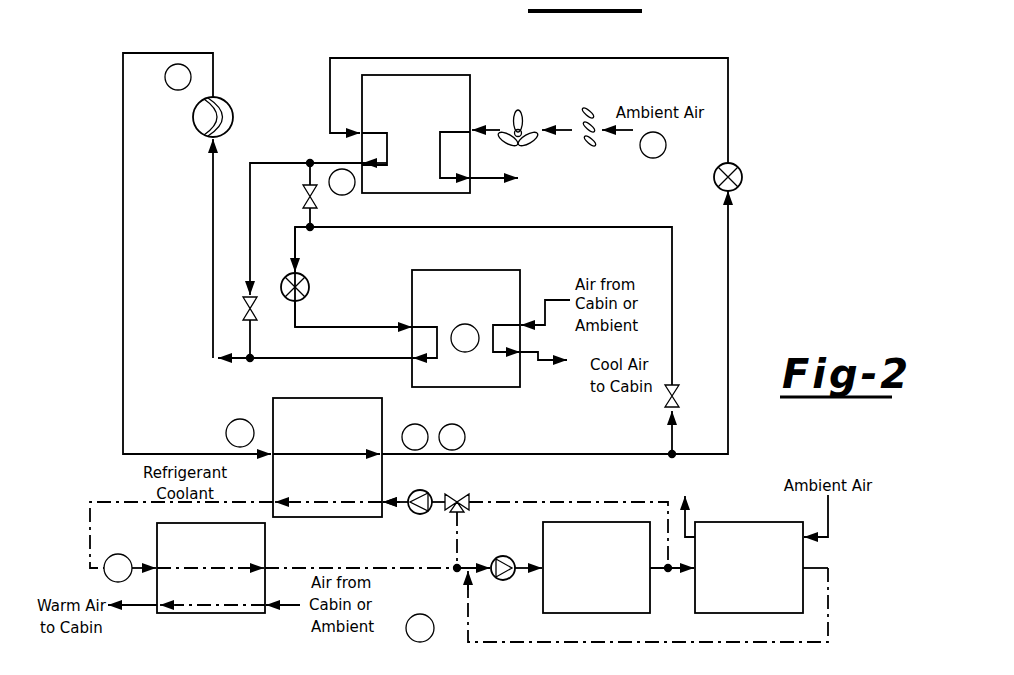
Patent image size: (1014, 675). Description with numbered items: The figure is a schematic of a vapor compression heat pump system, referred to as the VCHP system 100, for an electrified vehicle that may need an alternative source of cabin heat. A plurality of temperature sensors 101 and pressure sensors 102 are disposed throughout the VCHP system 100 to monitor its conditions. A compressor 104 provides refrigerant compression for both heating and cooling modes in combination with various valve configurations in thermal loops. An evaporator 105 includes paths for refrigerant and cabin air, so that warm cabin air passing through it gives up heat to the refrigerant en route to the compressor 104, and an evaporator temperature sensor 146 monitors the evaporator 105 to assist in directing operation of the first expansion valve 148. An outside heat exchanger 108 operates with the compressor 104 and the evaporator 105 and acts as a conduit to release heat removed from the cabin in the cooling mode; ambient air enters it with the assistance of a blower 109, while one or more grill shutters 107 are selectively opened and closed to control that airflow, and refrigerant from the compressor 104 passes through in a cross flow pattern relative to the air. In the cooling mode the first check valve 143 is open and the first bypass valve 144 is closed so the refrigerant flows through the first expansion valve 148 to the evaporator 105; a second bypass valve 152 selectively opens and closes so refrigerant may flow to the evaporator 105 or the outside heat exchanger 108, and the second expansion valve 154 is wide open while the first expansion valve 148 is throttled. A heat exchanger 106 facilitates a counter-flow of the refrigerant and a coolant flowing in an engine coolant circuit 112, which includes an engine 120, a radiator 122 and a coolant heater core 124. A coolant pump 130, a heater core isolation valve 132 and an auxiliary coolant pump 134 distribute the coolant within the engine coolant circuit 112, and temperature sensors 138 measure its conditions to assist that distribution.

The VCHP system 100 is at (115, 34).
The temperature sensors 101 is at (335, 170).
The pressure sensors 102 is at (178, 64).
The compressor 104 is at (193, 117).
The evaporator 105 is at (520, 286).
The heat exchanger 106 is at (273, 406).
The grill shutters 107 is at (592, 150).
The outside heat exchanger 108 is at (387, 75).
The blower 109 is at (520, 110).
The engine coolant circuit 112 is at (846, 608).
The engine 120 is at (598, 522).
The radiator 122 is at (751, 522).
The coolant heater core 124 is at (212, 614).
The coolant pump 130 is at (505, 581).
The heater core isolation valve 132 is at (470, 498).
The auxiliary coolant pump 134 is at (414, 512).
The temperature sensors 138 is at (104, 570).
The first check valve 143 is at (317, 203).
The first bypass valve 144 is at (240, 306).
The evaporator temperature sensor 146 is at (466, 352).
The first expansion valve 148 is at (310, 287).
The second bypass valve 152 is at (675, 392).
The second expansion valve 154 is at (742, 177).